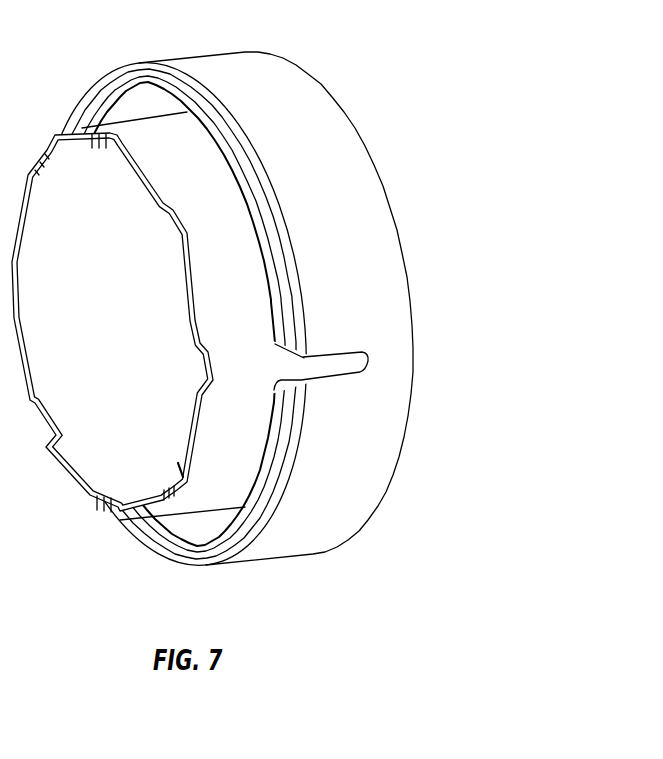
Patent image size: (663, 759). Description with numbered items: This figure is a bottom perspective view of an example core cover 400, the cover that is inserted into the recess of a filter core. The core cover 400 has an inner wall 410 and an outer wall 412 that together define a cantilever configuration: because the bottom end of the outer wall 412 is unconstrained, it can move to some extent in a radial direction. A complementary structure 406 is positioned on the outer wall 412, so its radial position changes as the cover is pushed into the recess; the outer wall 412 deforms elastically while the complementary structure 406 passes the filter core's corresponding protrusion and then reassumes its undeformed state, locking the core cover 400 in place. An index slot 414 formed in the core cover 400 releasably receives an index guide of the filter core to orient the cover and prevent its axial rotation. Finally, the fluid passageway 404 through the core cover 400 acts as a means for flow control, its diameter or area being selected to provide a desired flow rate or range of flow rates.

The core cover 400 is at (280, 315).
The fluid passageway 404 is at (127, 325).
The complementary structure 406 is at (128, 65).
The inner wall 410 is at (200, 495).
The outer wall 412 is at (340, 516).
The index slot 414 is at (342, 386).